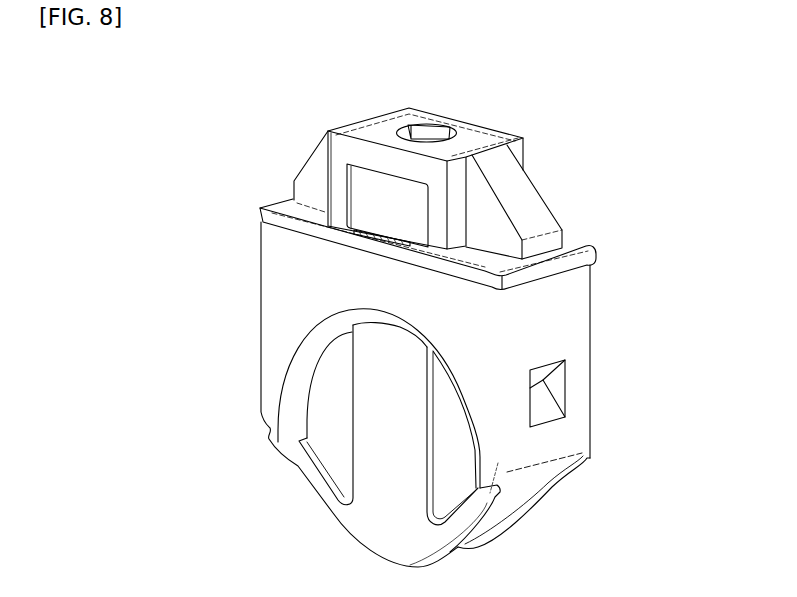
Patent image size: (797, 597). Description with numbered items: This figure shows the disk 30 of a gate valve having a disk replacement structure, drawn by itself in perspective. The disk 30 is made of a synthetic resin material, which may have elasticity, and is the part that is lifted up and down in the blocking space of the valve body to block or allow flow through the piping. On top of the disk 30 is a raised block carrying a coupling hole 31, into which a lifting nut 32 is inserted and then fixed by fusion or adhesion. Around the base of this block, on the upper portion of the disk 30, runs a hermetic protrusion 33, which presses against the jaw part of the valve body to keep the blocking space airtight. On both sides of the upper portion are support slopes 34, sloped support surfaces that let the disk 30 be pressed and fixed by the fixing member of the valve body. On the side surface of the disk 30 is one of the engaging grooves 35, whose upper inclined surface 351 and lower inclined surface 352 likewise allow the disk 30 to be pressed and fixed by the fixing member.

The disk 30 is at (273, 318).
The coupling hole 31 is at (433, 133).
The lifting nut 32 is at (378, 183).
The hermetic protrusion 33 is at (260, 222).
The support slopes 34 is at (320, 162).
The engaging grooves 35 is at (617, 392).
The upper inclined surface 351 is at (563, 377).
The lower inclined surface 352 is at (563, 405).